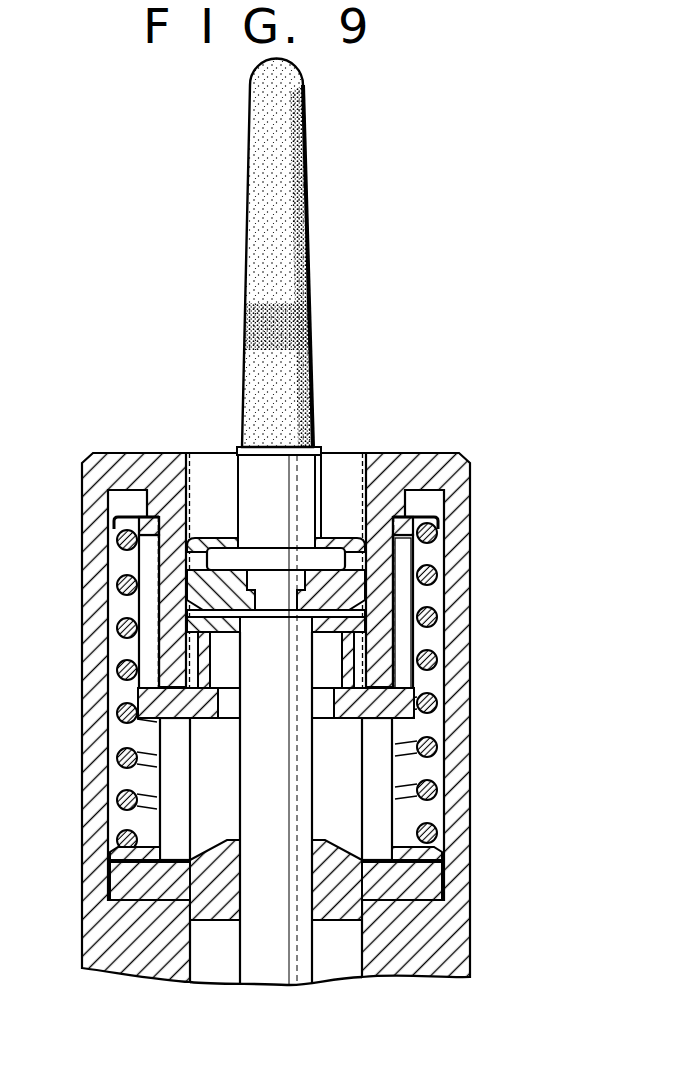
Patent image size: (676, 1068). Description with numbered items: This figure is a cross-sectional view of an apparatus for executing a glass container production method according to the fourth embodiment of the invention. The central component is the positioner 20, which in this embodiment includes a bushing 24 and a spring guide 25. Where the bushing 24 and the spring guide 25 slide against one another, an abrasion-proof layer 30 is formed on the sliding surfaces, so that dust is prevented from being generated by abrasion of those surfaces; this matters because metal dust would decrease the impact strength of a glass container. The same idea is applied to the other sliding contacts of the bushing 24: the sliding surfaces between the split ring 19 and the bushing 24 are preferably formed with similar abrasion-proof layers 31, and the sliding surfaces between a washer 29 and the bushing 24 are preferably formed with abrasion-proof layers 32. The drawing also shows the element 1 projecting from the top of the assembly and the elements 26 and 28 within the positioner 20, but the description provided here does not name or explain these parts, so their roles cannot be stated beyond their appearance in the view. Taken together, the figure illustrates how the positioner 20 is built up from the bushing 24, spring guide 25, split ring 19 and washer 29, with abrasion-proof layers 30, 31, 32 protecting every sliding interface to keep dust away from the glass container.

The tool 1 is at (309, 236).
The split ring 19 is at (348, 537).
The positioner 20 is at (394, 957).
The bushing 24 is at (398, 686).
The spring guide 25 is at (403, 634).
The coil spring 26 is at (428, 745).
The flange 28 is at (377, 680).
The washer 29 is at (407, 595).
The abrasion-proof layer 30 is at (155, 688).
The abrasion-proof layers 31 is at (196, 539).
The abrasion-proof layers 32 is at (229, 630).